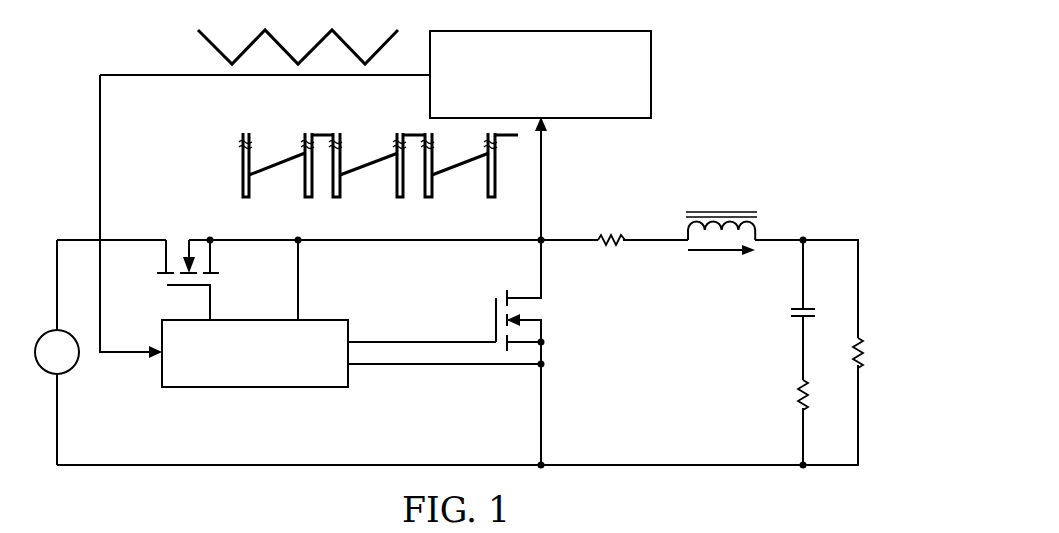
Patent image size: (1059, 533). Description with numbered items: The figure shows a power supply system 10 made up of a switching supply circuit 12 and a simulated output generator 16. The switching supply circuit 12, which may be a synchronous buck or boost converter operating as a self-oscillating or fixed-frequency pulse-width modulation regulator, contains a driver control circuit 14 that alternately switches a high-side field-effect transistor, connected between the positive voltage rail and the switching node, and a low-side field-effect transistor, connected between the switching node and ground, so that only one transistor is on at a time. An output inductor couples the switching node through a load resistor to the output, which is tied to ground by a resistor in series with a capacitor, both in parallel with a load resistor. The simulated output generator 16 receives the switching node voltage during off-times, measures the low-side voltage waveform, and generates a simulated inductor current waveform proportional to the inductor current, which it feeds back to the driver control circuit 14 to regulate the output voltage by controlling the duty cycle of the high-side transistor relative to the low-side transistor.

The power supply system 10 is at (770, 57).
The switching supply circuit 12 is at (40, 203).
The driver control circuit 14 is at (255, 388).
The simulated output generator 16 is at (651, 62).